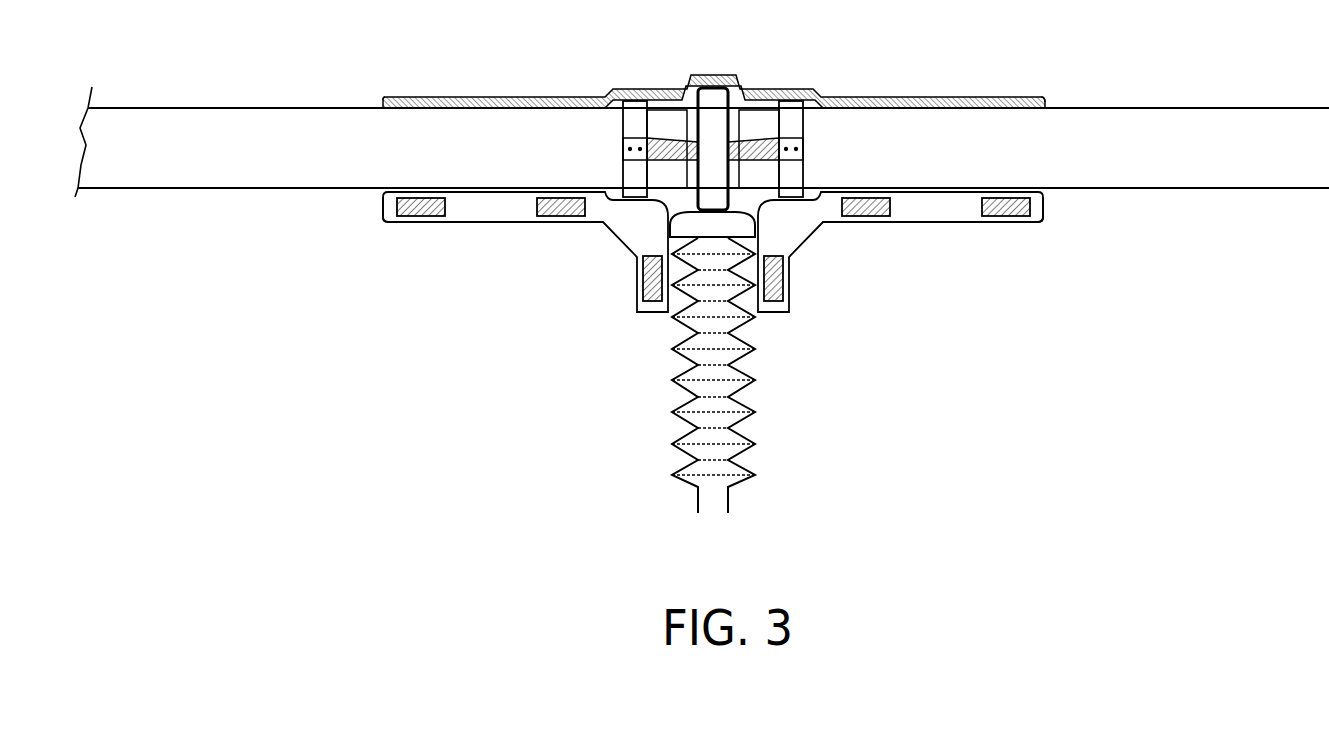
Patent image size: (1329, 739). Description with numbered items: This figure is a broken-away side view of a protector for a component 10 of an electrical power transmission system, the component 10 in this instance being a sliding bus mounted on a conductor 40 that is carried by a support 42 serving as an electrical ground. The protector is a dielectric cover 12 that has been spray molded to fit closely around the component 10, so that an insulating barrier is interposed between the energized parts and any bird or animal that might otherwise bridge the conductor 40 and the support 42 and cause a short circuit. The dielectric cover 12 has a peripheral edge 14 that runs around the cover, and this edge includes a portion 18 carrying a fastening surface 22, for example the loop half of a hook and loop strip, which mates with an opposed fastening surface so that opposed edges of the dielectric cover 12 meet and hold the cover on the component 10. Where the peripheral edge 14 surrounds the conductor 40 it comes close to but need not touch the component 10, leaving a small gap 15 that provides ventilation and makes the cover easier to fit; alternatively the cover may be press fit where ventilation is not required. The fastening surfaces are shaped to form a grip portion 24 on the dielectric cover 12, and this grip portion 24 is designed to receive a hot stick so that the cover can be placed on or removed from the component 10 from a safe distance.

The component 10 is at (762, 113).
The dielectric cover 12 is at (587, 97).
The peripheral edge 14 is at (512, 223).
The small gap 15 is at (368, 108).
The portion 18 is at (385, 223).
The surface 22 is at (643, 290).
The grip portion 24 is at (458, 217).
The conductor 40 is at (227, 108).
The support 42 is at (672, 412).